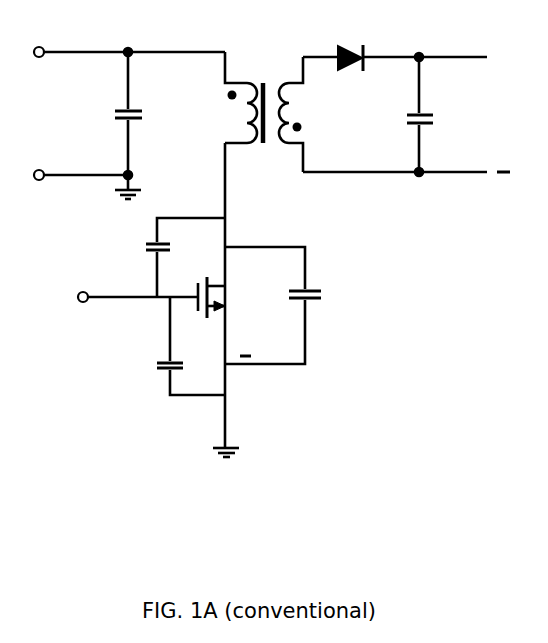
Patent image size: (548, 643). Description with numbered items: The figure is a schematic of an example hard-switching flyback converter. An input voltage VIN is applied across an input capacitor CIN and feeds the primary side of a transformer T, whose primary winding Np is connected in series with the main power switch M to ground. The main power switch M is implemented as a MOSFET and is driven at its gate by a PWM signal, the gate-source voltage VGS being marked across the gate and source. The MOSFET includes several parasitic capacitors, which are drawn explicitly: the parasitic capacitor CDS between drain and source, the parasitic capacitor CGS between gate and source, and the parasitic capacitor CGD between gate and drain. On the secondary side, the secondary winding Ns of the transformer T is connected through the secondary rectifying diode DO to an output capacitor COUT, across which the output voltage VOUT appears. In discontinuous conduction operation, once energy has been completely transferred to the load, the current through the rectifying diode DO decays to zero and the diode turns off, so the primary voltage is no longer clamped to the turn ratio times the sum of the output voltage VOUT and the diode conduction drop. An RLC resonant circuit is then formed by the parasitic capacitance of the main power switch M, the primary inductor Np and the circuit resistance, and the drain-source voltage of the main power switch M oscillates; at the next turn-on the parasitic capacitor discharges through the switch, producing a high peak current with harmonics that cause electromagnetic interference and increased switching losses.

The input capacitor CIN is at (144, 113).
The input voltage VIN is at (24, 118).
The transformer T is at (266, 105).
The primary inductor Np is at (236, 97).
The secondary winding Ns is at (298, 114).
The secondary rectifying diode DO is at (361, 41).
The output capacitor COUT is at (394, 114).
The output voltage VOUT is at (498, 108).
The parasitic capacitor CGD is at (163, 257).
The PWM signal input PWM is at (106, 300).
The parasitic capacitor between gate and source CGS is at (173, 346).
The main power switch M is at (207, 284).
The gate-source voltage VGS is at (247, 300).
The parasitic capacitor between drain and source CDS is at (295, 305).